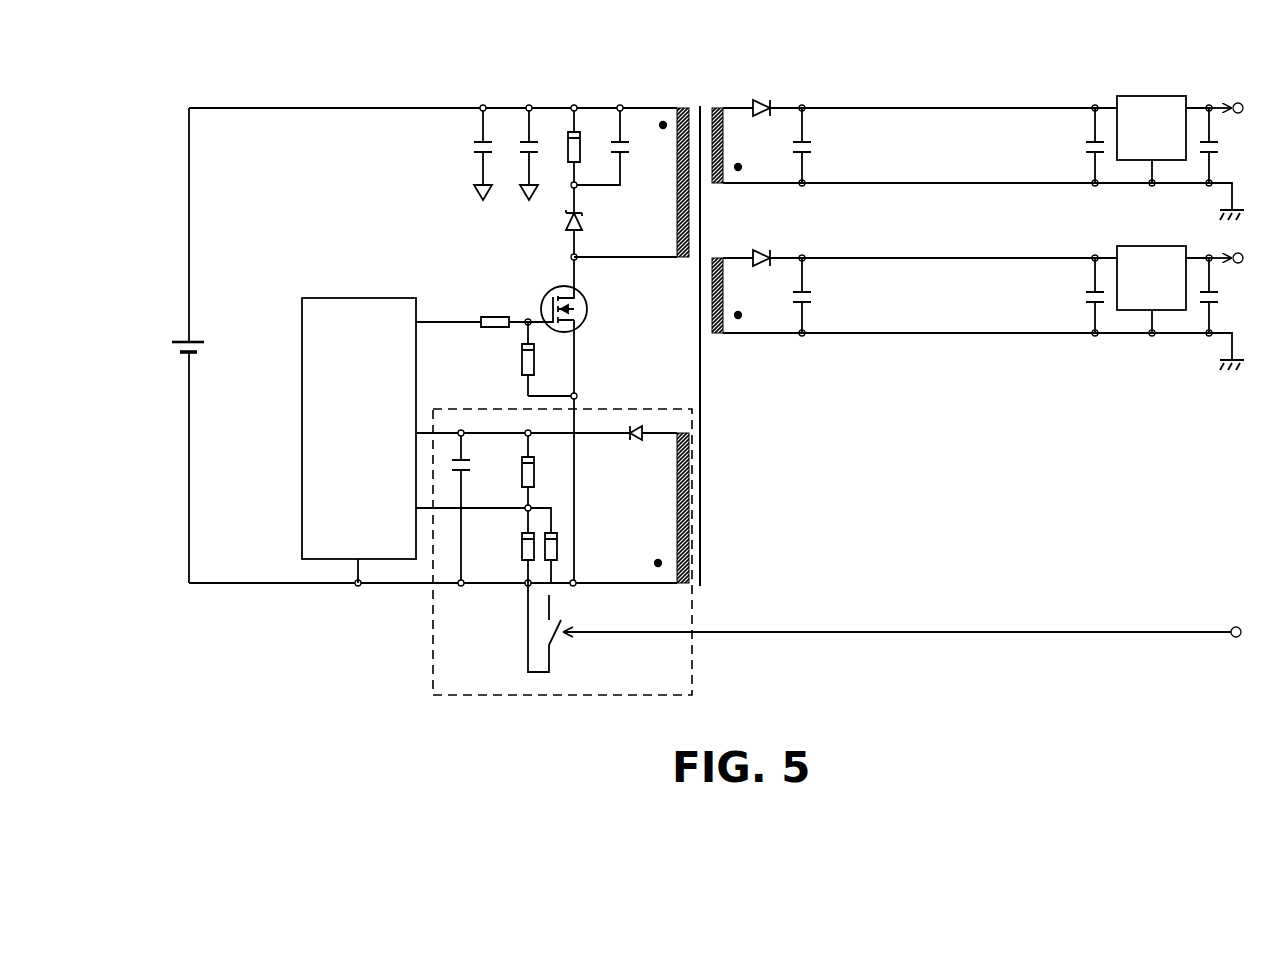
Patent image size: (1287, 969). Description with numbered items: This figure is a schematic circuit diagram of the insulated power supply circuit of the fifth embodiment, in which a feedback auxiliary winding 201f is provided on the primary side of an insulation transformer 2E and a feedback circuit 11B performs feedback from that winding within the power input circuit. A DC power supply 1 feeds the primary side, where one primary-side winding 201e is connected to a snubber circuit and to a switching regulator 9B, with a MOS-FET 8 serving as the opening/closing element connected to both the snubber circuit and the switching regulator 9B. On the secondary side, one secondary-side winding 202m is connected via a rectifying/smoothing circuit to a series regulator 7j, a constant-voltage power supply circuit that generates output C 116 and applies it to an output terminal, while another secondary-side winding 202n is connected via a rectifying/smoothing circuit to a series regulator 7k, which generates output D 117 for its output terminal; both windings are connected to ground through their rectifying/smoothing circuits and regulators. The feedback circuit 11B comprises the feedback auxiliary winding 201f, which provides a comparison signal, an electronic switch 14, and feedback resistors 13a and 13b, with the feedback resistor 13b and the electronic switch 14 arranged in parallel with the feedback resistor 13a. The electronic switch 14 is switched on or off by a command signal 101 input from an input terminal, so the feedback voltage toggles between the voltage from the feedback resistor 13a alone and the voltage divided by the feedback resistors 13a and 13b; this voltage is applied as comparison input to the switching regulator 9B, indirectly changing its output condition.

The DC power supply 1 is at (177, 335).
The insulation transformer 2E is at (676, 310).
The primary-side winding 201e is at (676, 160).
The feedback auxiliary winding 201f is at (678, 488).
The secondary-side winding 202m is at (718, 186).
The secondary-side winding 202n is at (718, 336).
The series regulator 7j is at (1133, 96).
The series regulator 7k is at (1133, 246).
The output C 116 is at (1219, 106).
The output D 117 is at (1219, 256).
The MOS-FET 8 is at (551, 300).
The switching regulator 9B is at (359, 298).
The feedback circuit 11B is at (562, 527).
The feedback resistor 13a is at (521, 547).
The feedback resistor 13b is at (575, 519).
The electronic switch 14 is at (551, 660).
The command signal 101 is at (1123, 630).